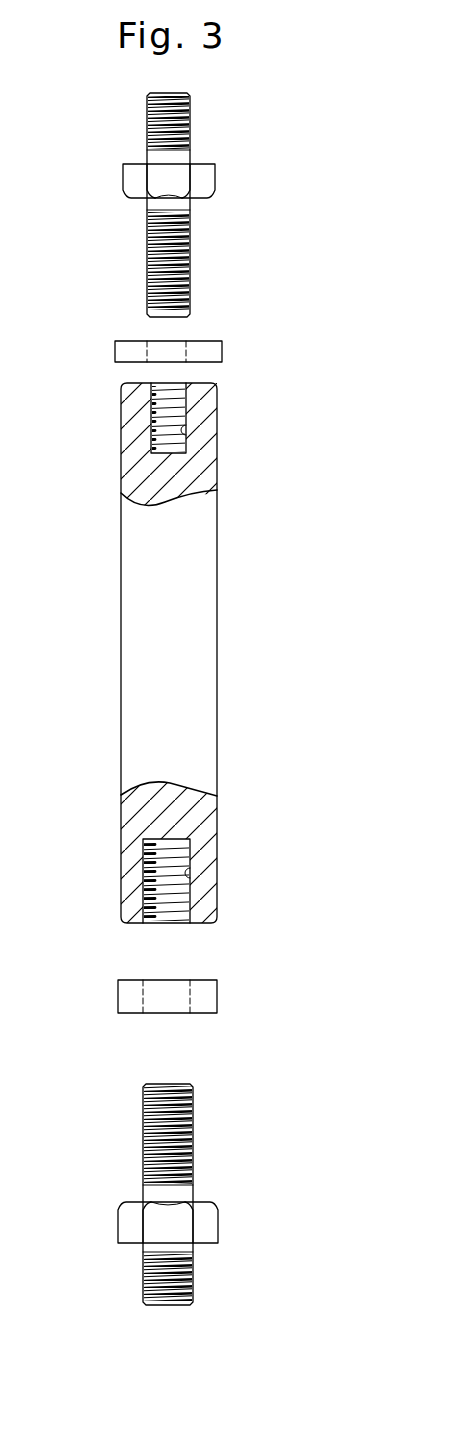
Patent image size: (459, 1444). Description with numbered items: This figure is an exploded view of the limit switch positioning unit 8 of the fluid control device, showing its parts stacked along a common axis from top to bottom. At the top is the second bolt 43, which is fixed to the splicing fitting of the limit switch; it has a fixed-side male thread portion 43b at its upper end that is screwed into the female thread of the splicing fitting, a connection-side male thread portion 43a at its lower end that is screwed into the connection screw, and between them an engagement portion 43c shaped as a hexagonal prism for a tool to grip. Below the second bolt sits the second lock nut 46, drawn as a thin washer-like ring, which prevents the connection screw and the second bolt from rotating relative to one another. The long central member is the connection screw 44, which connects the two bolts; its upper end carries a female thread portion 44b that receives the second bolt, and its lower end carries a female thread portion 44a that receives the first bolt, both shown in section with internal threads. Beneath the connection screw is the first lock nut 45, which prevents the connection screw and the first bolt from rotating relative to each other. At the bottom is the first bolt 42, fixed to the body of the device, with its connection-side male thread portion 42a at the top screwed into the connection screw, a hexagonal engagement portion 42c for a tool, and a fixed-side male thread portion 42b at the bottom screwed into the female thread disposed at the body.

The limit switch positioning unit 8 is at (177, 705).
The first bolt 42 is at (154, 1201).
The connection-side male thread portion 42a is at (156, 1115).
The fixed-side male thread portion 42b is at (150, 1279).
The engagement portion 42c is at (125, 1220).
The second bolt 43 is at (154, 205).
The connection-side male thread portion 43a is at (155, 277).
The fixed-side male thread portion 43b is at (152, 121).
The engagement portion 43c is at (128, 190).
The connection screw 44 is at (222, 653).
The female thread portion 44a is at (192, 886).
The female thread portion 44b is at (182, 431).
The first lock nut 45 is at (217, 998).
The second lock nut 46 is at (222, 351).